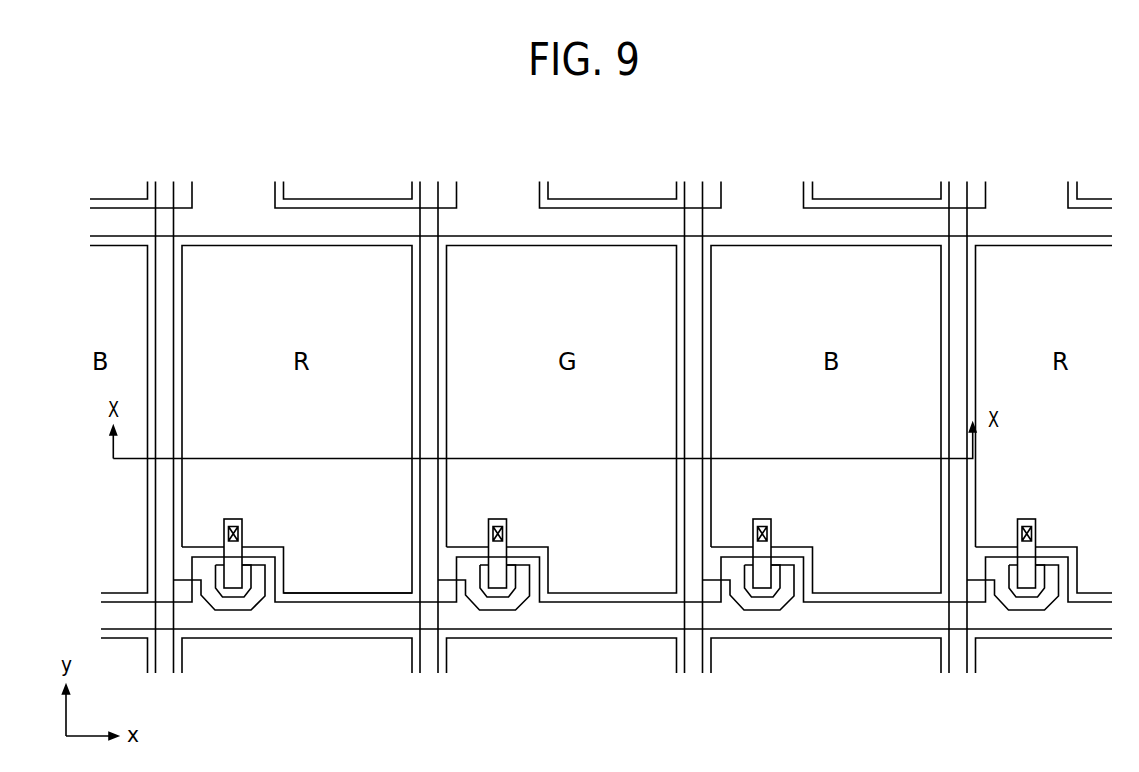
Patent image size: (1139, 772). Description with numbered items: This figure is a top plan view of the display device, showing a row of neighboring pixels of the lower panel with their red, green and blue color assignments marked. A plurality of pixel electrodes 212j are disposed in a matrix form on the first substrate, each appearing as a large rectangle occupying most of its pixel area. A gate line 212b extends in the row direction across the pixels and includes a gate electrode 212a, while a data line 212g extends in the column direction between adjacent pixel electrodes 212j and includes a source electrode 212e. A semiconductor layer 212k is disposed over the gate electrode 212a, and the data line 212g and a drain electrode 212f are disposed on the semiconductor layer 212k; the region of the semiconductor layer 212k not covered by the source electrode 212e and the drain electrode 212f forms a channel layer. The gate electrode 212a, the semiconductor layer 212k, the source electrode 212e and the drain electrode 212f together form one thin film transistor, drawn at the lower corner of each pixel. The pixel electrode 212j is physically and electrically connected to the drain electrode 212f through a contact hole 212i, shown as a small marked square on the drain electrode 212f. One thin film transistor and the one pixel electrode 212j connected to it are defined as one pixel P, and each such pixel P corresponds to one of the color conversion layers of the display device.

The pixel P is at (236, 229).
The gate electrode 212a is at (276, 578).
The gate line 212b is at (342, 596).
The source electrode 212e is at (235, 612).
The drain electrode 212f is at (242, 538).
The data line 212g is at (156, 368).
The contact hole 212i is at (242, 530).
The pixel electrode 212j is at (183, 310).
The semiconductor layer 212k is at (252, 566).